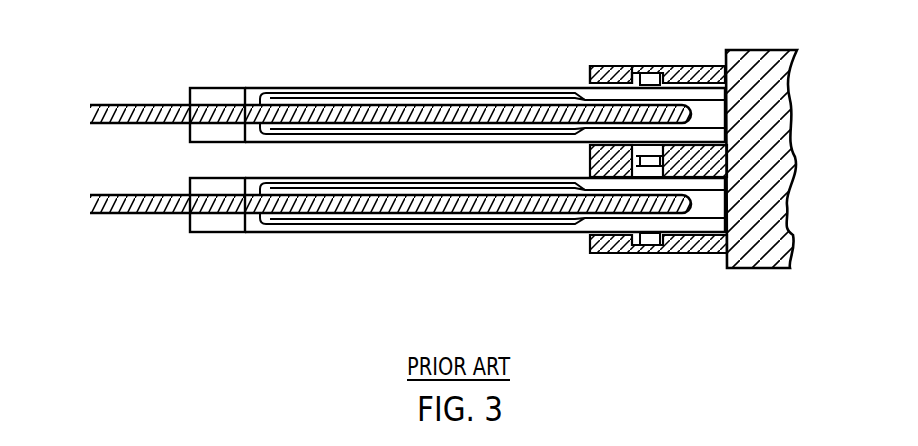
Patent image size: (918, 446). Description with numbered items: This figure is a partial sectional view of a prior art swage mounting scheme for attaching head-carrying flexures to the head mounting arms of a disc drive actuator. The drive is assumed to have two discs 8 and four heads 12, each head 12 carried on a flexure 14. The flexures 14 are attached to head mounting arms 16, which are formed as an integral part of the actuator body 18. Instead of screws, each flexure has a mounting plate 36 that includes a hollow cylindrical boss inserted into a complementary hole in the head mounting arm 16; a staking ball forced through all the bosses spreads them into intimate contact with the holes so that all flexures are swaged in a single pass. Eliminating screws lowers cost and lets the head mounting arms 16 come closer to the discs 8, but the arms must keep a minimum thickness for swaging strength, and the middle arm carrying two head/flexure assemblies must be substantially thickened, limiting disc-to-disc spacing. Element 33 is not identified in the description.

The disc 8 is at (115, 203).
The head 12 is at (213, 128).
The flexure 14 is at (390, 138).
The head mounting arm 16 is at (707, 77).
The actuator body 18 is at (770, 63).
The pin 33 is at (642, 67).
The mounting plate 36 is at (605, 82).